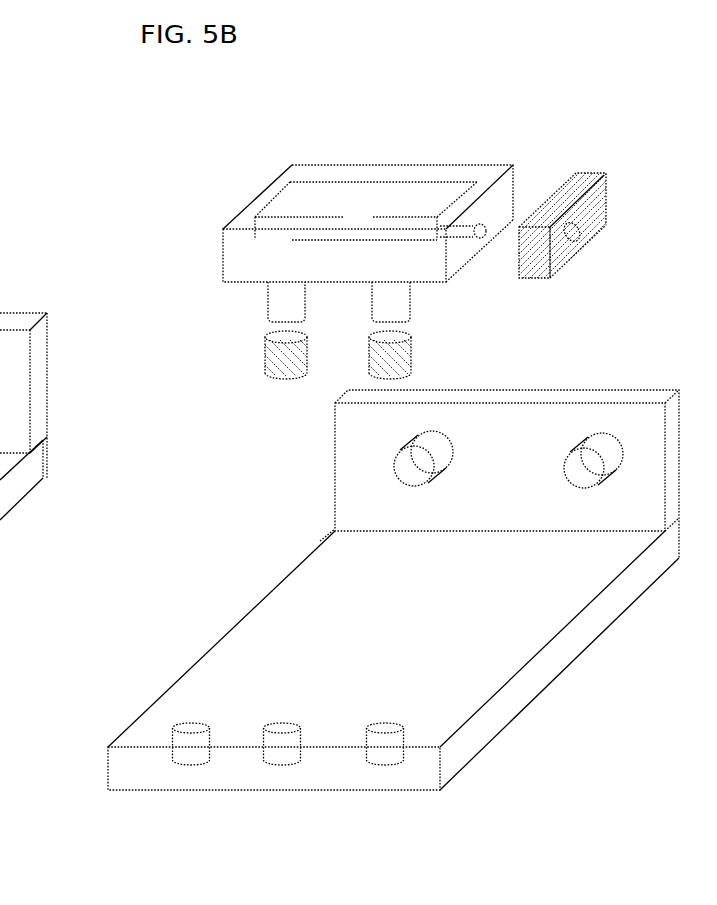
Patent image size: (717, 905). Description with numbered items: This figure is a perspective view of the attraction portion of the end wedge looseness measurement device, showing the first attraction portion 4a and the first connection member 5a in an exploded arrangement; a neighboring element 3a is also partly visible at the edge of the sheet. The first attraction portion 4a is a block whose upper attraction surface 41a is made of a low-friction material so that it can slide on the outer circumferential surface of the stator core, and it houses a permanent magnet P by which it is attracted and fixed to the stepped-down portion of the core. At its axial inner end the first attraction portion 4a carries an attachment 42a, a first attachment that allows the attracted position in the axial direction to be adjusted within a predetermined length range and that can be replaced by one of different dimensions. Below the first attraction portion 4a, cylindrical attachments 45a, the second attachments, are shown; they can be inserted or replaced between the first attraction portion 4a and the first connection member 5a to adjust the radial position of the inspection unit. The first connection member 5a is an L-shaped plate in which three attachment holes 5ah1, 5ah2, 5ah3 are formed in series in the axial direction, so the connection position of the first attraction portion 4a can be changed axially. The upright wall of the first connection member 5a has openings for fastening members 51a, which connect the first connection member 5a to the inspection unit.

The adjacent unit 3a is at (23, 466).
The first attraction portion 4a is at (247, 196).
The permanent magnet P is at (327, 174).
The attraction surface 41a is at (488, 172).
The attachment 42a is at (585, 237).
The attachments 45a is at (413, 356).
The first connection member 5a is at (108, 757).
The fastening members 51a is at (400, 458).
The attachment hole 5ah1 is at (195, 744).
The attachment hole 5ah2 is at (290, 745).
The attachment hole 5ah3 is at (377, 745).